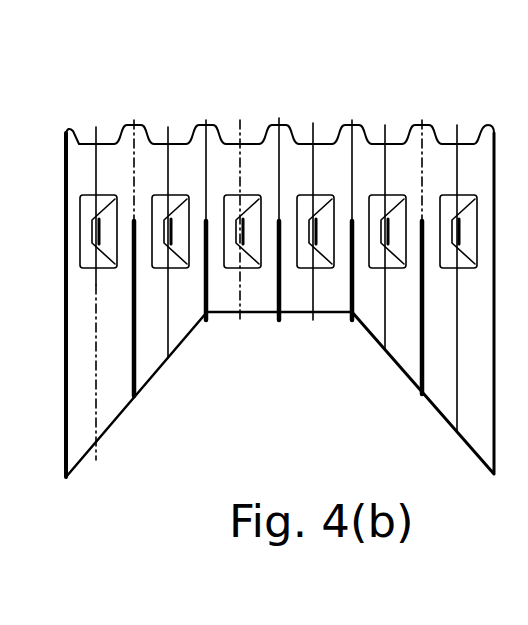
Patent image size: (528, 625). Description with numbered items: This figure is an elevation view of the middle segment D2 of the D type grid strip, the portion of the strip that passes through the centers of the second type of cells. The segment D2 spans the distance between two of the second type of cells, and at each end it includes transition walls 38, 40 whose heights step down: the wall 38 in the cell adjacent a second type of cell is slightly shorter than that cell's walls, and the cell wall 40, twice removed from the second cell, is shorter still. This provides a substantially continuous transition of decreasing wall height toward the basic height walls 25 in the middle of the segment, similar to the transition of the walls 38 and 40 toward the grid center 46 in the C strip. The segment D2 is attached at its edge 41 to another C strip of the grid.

The edge 41 is at (64, 185).
The grid center 46 is at (280, 128).
The segment D2 is at (237, 124).
The walls 25 is at (240, 303).
The cell wall 40 is at (163, 348).
The wall 38 is at (98, 418).